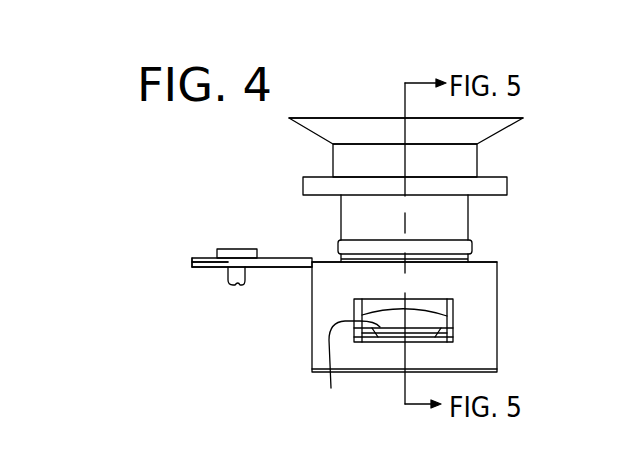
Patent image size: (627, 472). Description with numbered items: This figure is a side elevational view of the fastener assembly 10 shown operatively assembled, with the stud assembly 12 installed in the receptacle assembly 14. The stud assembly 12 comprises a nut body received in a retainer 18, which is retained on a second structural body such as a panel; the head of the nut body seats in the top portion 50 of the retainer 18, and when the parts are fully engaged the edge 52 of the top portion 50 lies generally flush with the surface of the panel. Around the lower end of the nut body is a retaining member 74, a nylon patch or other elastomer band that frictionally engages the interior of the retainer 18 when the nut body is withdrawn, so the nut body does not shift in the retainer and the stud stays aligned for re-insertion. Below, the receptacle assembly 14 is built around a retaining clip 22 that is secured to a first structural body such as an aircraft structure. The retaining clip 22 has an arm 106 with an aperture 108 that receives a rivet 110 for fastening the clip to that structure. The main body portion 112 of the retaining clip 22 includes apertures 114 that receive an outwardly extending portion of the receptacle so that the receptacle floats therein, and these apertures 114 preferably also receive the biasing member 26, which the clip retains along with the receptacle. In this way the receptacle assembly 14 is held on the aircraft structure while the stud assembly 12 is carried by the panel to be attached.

The push button switch assembly 10 is at (214, 356).
The stud assembly 12 is at (514, 187).
The receptacle assembly 14 is at (506, 317).
The retainer 18 is at (478, 160).
The retaining clip 22 is at (279, 268).
The biasing member 26 is at (426, 328).
The top portion 50 is at (507, 127).
The edge 52 is at (522, 120).
The retaining member 74 is at (474, 247).
The arm 106 is at (198, 269).
The aperture 108 is at (192, 262).
The rivet 110 is at (240, 251).
The main body portion 112 is at (499, 272).
The apertures 114 is at (346, 372).